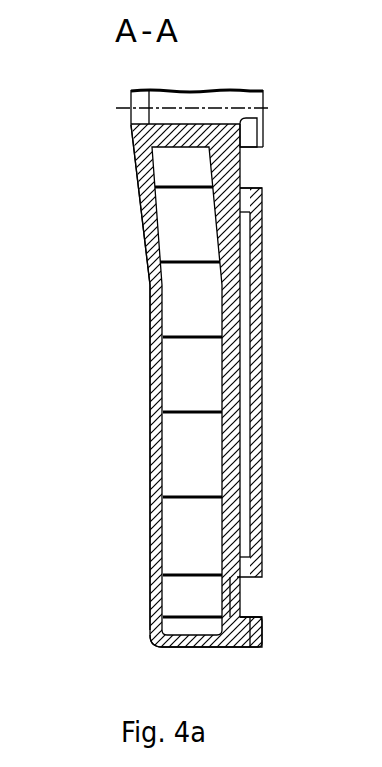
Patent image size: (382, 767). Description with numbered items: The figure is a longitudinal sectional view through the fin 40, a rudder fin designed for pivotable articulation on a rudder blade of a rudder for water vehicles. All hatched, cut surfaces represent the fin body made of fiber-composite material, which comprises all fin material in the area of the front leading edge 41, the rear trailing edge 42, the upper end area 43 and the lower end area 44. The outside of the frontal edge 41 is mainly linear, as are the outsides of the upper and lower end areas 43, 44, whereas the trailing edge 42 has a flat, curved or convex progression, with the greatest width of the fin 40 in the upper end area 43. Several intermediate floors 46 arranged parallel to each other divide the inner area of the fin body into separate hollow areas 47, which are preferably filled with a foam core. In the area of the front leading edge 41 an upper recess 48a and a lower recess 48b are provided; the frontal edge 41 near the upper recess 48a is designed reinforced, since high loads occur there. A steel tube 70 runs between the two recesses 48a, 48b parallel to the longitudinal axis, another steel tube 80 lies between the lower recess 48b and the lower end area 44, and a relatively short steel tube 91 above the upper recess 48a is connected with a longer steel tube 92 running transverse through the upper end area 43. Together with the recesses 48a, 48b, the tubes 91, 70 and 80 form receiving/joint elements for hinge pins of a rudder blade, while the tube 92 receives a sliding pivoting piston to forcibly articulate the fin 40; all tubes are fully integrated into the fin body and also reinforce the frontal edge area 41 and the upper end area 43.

The fin 40 is at (101, 430).
The front leading edge 41 is at (265, 348).
The rear trailing edge 42 is at (148, 362).
The upper end area 43 is at (196, 87).
The lower end area 44 is at (194, 650).
The intermediate floors 46 is at (214, 263).
The hollow areas 47 is at (172, 236).
The upper recess 48a is at (256, 169).
The lower recess 48b is at (252, 601).
The steel tube 70 is at (249, 409).
The steel tube 80 is at (248, 630).
The short steel tube 91 is at (249, 138).
The steel tube 92 is at (225, 100).